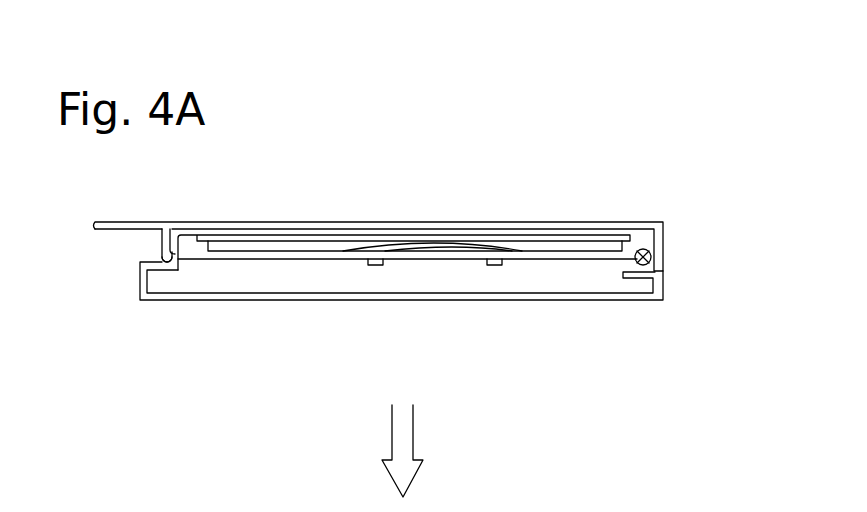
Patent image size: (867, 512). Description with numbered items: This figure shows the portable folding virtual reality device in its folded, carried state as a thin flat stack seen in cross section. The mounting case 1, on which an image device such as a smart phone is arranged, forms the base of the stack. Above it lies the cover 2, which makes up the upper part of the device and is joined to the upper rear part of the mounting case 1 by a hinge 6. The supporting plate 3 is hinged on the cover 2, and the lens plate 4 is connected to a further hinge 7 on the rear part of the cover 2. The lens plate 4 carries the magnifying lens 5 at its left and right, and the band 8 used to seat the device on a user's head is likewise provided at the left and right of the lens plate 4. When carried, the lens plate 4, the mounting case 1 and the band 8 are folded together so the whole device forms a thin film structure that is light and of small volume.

The mounting case 1 is at (611, 300).
The cover 2 is at (400, 222).
The supporting plate 3 is at (495, 232).
The lens plate 4 is at (550, 257).
The magnifying lens 5 is at (430, 253).
The hinge 6 is at (160, 260).
The hinge 7 is at (651, 254).
The band 8 is at (605, 245).